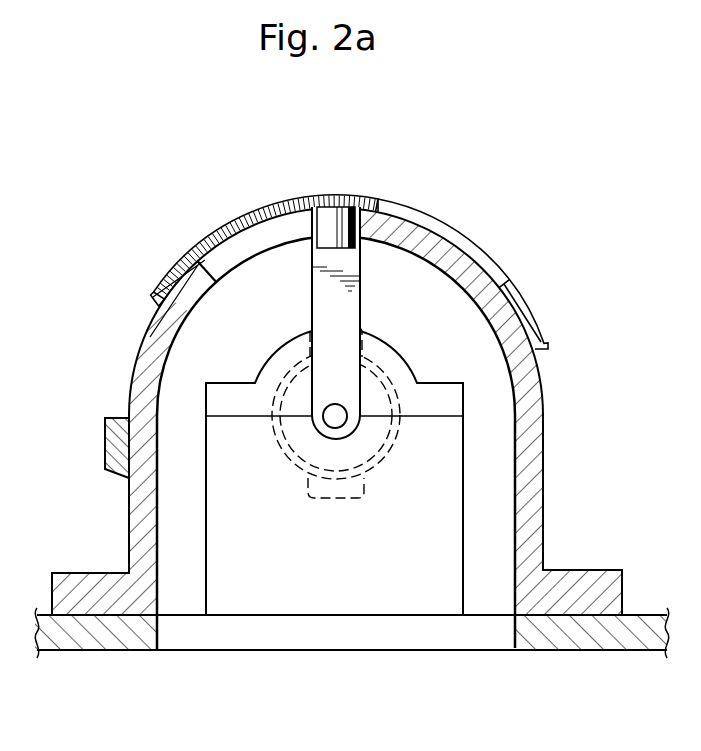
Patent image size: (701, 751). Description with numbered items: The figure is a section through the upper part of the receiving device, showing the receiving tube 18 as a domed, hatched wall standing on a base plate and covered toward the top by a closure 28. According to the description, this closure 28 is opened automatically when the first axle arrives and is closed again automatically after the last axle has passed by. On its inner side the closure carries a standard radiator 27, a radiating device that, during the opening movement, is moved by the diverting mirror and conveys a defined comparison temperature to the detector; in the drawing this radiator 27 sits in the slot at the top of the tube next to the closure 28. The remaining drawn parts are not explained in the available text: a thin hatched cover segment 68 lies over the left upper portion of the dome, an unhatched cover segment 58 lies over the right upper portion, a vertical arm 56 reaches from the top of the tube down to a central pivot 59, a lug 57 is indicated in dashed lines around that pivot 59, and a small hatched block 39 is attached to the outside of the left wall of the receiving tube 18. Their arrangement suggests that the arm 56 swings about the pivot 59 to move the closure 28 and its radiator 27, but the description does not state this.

The receiving tube 18 is at (525, 440).
The standard radiator 27 is at (328, 218).
The closure 28 is at (358, 212).
The stop block 39 is at (112, 457).
The lever arm 56 is at (323, 313).
The lug 57 is at (378, 460).
The right cover segment 58 is at (487, 265).
The pivot pin 59 is at (330, 421).
The left cover segment 68 is at (237, 245).